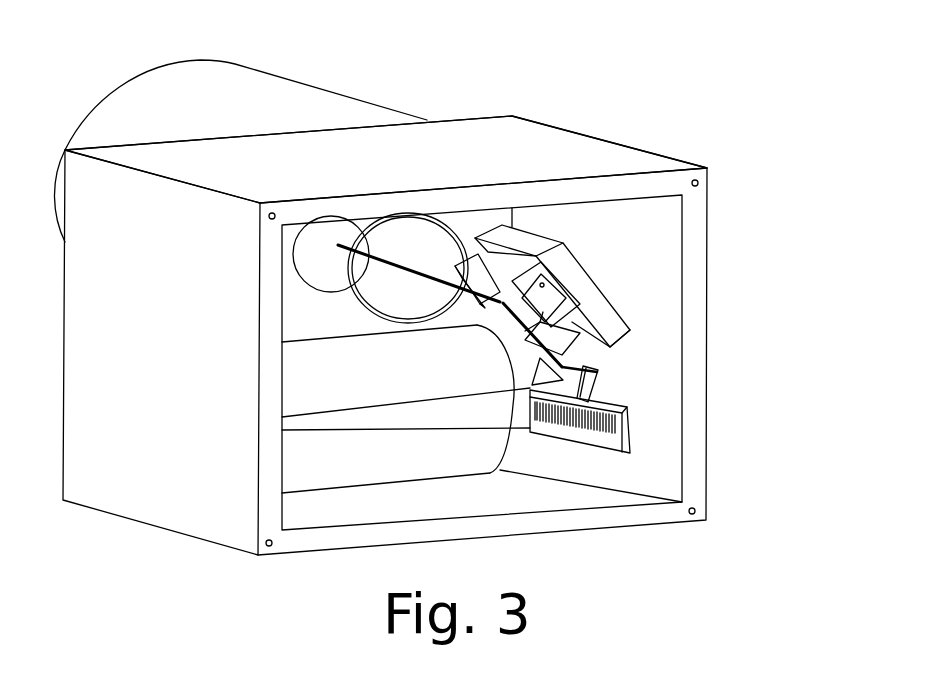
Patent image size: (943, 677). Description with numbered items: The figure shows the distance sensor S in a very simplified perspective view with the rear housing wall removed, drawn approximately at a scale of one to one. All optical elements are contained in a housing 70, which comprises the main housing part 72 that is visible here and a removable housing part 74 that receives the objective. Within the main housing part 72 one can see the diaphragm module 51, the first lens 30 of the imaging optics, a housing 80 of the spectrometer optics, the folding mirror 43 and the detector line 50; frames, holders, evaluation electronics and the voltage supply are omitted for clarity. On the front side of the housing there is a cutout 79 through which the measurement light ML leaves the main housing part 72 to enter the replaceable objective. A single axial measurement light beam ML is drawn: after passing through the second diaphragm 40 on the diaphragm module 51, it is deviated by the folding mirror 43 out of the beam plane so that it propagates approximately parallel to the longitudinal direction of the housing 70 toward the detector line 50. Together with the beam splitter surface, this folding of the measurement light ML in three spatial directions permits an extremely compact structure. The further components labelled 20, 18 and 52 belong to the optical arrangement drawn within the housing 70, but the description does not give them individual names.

The distance sensor S is at (724, 126).
The housing 70 is at (488, 105).
The main housing part 72 is at (576, 143).
The removable housing part 74 is at (317, 96).
The housing of the spectrometer optics 80 is at (485, 462).
The cutout 79 is at (310, 276).
The first lens 30 is at (370, 298).
The measurement light ML is at (403, 250).
The mirror 20 is at (482, 262).
The diaphragm module 51 is at (590, 268).
The sensor 18 is at (553, 280).
The support end 52 is at (627, 329).
The second diaphragm 40 is at (566, 355).
The folding mirror 43 is at (581, 377).
The detector line 50 is at (605, 446).